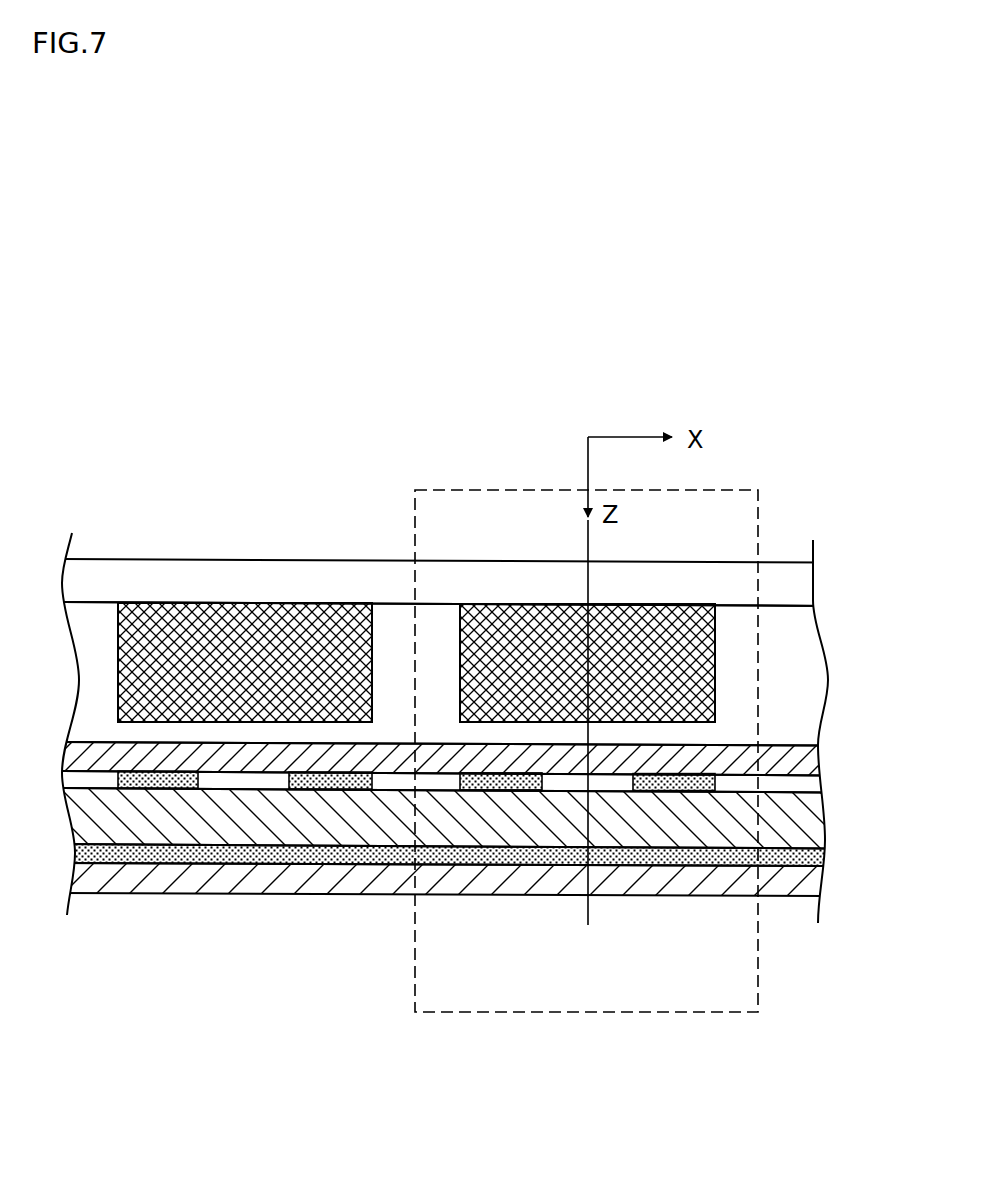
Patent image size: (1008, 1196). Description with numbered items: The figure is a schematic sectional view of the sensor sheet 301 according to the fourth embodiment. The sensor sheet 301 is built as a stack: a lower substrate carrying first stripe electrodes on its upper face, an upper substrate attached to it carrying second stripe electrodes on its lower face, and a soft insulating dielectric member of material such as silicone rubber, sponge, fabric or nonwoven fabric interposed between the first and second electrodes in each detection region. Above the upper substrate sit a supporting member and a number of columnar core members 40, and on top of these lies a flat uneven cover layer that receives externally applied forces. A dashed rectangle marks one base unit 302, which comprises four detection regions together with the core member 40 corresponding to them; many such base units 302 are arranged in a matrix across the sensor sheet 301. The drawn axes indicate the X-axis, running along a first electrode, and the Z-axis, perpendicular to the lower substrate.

The sensor sheet 301 is at (820, 373).
The base unit 302 is at (489, 486).
The columnar core member 40 is at (655, 622).